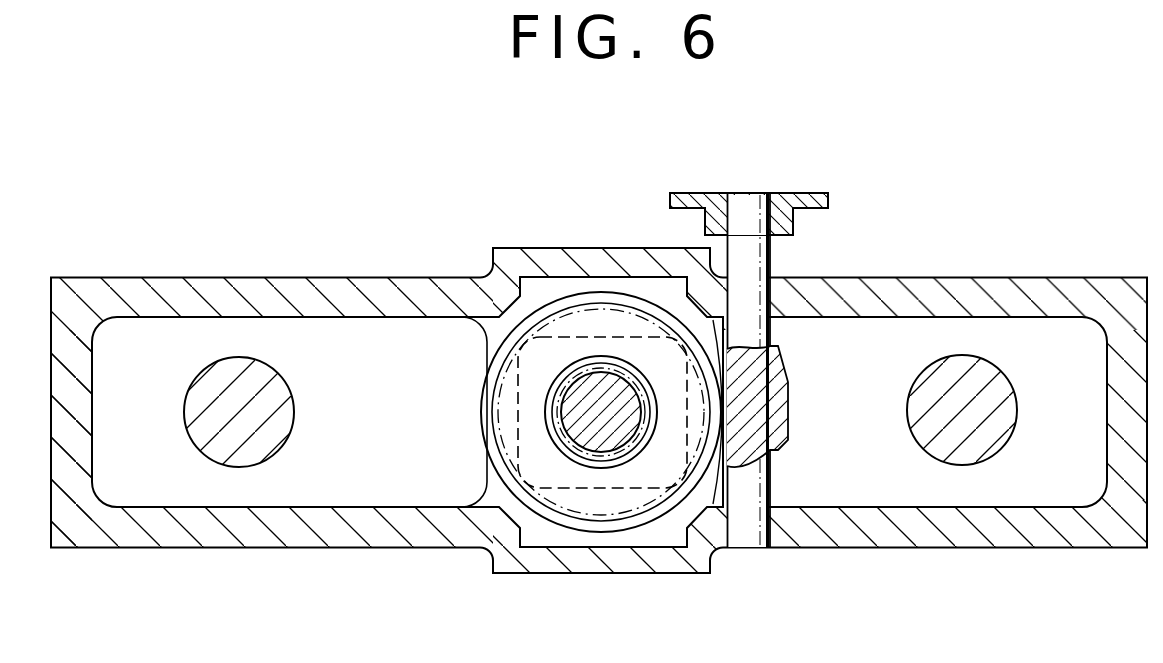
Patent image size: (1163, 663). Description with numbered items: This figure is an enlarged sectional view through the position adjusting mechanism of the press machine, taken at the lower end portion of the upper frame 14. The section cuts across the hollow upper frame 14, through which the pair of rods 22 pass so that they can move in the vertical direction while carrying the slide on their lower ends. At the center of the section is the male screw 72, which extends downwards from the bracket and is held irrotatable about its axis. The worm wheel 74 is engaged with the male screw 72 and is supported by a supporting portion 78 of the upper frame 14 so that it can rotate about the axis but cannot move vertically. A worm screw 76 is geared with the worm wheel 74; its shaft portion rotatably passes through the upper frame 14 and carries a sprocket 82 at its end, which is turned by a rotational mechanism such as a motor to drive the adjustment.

The upper frame 14 is at (1025, 290).
The rods 22 is at (262, 395).
The male screw 72 is at (620, 452).
The worm wheel 74 is at (571, 507).
The worm screw 76 is at (783, 437).
The supporting portion 78 is at (594, 337).
The sprocket 82 is at (787, 198).